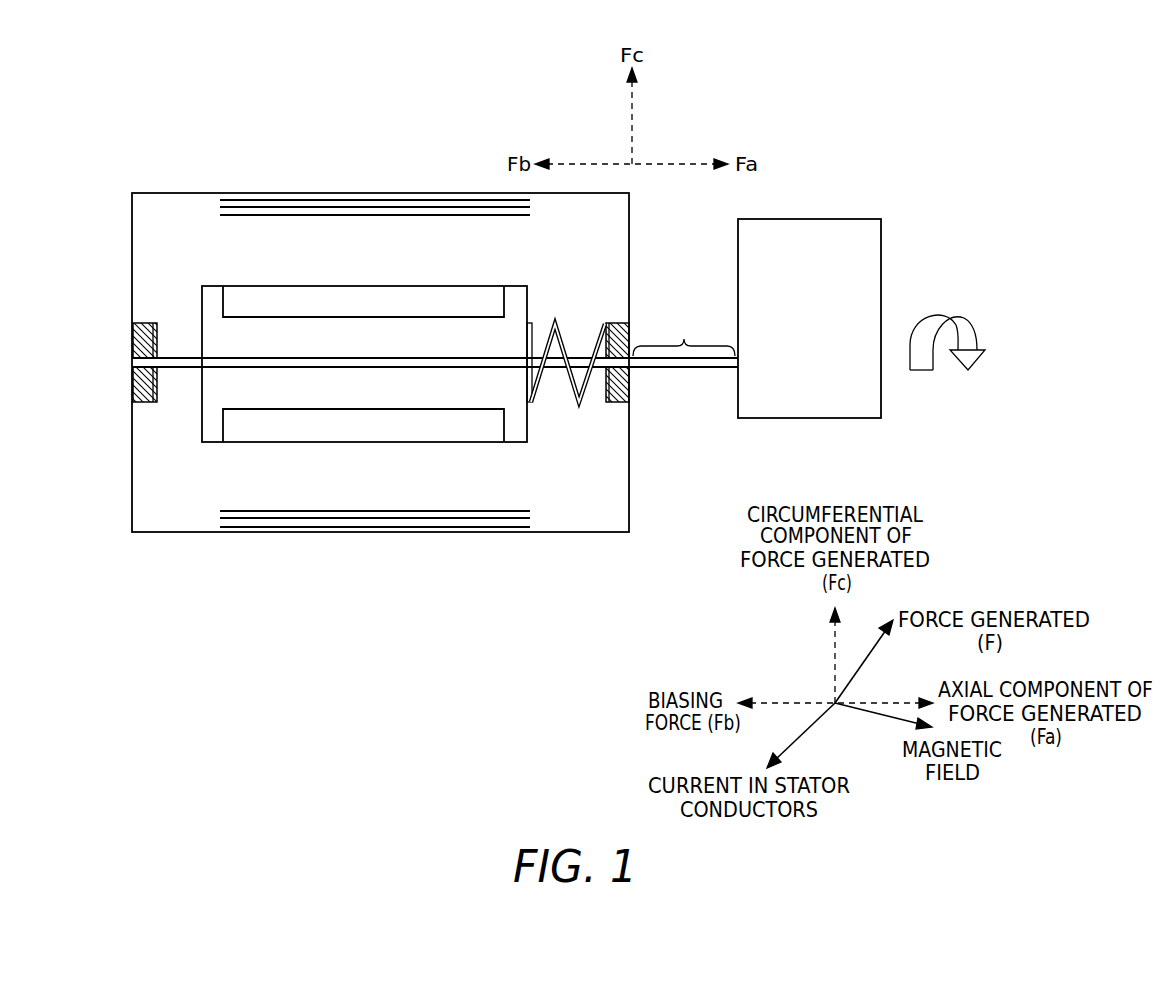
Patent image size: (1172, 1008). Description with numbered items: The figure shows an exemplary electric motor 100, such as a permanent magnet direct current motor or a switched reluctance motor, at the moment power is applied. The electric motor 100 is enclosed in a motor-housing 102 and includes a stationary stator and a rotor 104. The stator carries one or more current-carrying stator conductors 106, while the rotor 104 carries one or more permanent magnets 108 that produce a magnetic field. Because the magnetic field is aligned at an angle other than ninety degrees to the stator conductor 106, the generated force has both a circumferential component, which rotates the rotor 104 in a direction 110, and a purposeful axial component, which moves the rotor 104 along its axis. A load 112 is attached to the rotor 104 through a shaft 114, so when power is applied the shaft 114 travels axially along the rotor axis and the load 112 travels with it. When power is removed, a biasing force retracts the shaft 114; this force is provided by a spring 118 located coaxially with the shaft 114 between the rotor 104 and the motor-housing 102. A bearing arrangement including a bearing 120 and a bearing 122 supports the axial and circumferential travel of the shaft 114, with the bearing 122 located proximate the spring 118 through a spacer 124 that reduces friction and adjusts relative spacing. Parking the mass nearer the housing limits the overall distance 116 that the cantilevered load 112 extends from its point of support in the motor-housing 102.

The electric motor 100 is at (96, 96).
The motor-housing 102 is at (173, 193).
The rotor 104 is at (366, 286).
The current-carrying stator conductor 106 is at (262, 511).
The permanent magnet 108 is at (246, 308).
The direction 110 is at (985, 339).
The load 112 is at (810, 219).
The shaft 114 is at (703, 370).
The distance 116 is at (684, 339).
The spring 118 is at (580, 406).
The bearing 120 is at (139, 322).
The bearing 122 is at (618, 323).
The spacer 124 is at (609, 405).